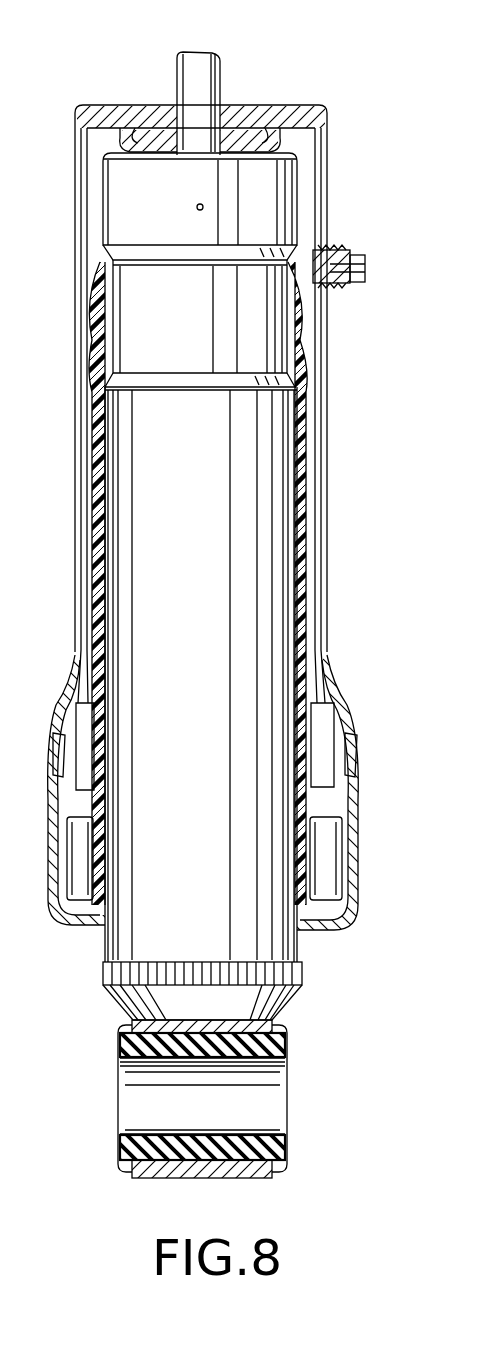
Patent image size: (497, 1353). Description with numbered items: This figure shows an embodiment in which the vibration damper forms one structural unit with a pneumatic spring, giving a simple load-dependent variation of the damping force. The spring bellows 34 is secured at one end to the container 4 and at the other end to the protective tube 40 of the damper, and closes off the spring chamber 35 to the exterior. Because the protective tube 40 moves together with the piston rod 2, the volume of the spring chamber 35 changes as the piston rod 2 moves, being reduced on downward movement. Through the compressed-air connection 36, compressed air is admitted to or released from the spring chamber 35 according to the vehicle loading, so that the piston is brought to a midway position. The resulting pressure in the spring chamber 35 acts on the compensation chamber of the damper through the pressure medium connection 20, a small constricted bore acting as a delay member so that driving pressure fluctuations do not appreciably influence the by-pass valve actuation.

The piston rod 2 is at (213, 78).
The container 4 is at (252, 553).
The pressure medium connection 20 is at (205, 205).
The spring bellows 34 is at (358, 838).
The spring chamber 35 is at (307, 342).
The compressed-air connection 36 is at (360, 250).
The protective tube 40 is at (328, 442).